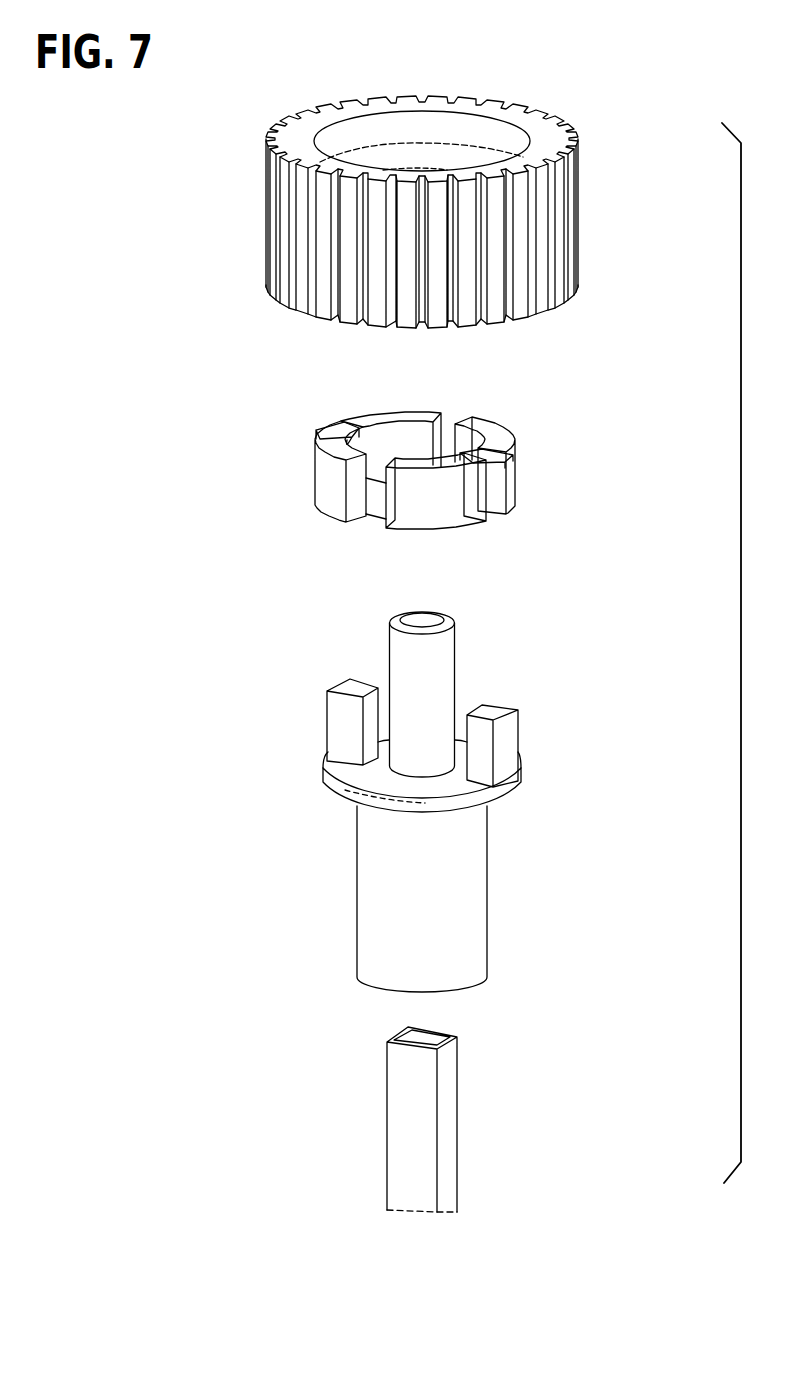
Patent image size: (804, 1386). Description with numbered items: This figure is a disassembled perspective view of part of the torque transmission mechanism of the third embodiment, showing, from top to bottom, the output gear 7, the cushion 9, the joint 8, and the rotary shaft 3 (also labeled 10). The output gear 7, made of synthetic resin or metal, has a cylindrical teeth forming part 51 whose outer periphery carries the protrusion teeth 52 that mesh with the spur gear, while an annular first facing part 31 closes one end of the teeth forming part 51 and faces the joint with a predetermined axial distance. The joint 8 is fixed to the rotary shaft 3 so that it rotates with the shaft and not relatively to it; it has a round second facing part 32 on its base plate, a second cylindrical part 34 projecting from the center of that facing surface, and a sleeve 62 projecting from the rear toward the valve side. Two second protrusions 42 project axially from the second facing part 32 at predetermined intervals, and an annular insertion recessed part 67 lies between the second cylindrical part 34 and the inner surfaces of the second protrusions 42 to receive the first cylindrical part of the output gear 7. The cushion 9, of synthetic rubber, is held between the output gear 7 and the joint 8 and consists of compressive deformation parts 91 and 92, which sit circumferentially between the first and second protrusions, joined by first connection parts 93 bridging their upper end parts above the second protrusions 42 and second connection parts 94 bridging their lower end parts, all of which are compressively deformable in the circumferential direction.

The output gear 7 is at (269, 120).
The first facing part 31 is at (476, 158).
The teeth forming part 51 is at (536, 133).
The protrusion teeth 52 is at (572, 130).
The cushion 9 is at (301, 437).
The compressive deformation part 91 is at (412, 412).
The compressive deformation part 92 is at (508, 432).
The first connection part 93 is at (340, 420).
The second connection part 94 is at (362, 530).
The joint 8 is at (320, 698).
The second cylindrical part 34 is at (455, 655).
The second protrusions 42 is at (518, 727).
The second facing part 32 is at (455, 790).
The insertion recessed part 67 is at (380, 762).
The sleeve 62 is at (488, 880).
The rotary shaft 3 is at (457, 1125).
The drive unit 10 is at (422, 1119).